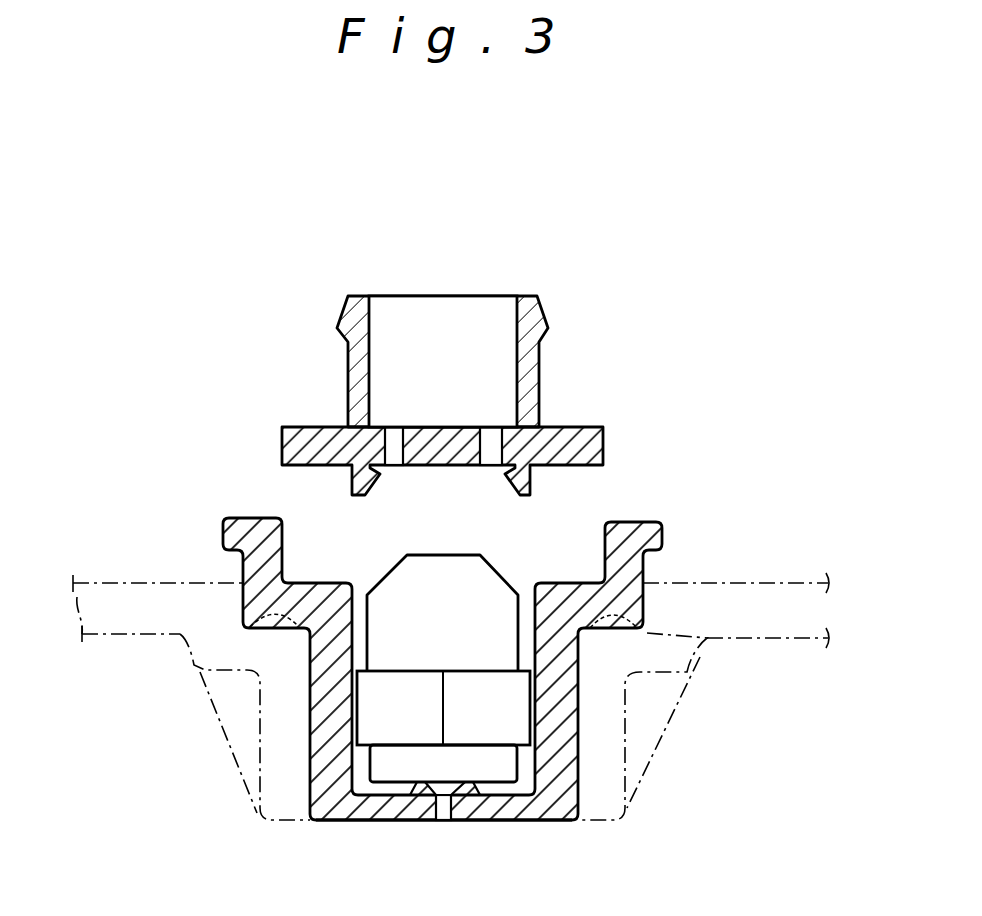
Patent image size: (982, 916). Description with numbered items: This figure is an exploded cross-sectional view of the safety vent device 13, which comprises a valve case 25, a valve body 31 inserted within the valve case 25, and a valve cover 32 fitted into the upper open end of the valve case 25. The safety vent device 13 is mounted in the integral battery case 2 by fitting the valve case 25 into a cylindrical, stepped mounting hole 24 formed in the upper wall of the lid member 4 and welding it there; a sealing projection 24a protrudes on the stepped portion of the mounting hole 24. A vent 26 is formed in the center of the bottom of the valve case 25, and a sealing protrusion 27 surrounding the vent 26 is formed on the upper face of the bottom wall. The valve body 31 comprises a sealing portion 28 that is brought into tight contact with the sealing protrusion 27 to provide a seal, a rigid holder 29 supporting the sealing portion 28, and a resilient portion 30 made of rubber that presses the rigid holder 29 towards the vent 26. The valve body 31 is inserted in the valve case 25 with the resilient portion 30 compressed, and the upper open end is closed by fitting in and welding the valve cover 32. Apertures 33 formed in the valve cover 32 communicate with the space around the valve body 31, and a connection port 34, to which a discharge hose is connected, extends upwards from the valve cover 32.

The integral battery case 2 is at (737, 580).
The lid member 4 is at (100, 634).
The safety vent device 13 is at (185, 553).
The stepped mounting hole 24 is at (273, 707).
The sealing projection 24a is at (250, 617).
The valve case 25 is at (322, 750).
The vent 26 is at (443, 808).
The sealing protrusion 27 is at (418, 784).
The sealing portion 28 is at (495, 765).
The rigid holder 29 is at (495, 716).
The resilient portion 30 is at (466, 630).
The valve body 31 is at (772, 688).
The valve cover 32 is at (585, 452).
The apertures 33 is at (488, 457).
The connection port 34 is at (527, 368).